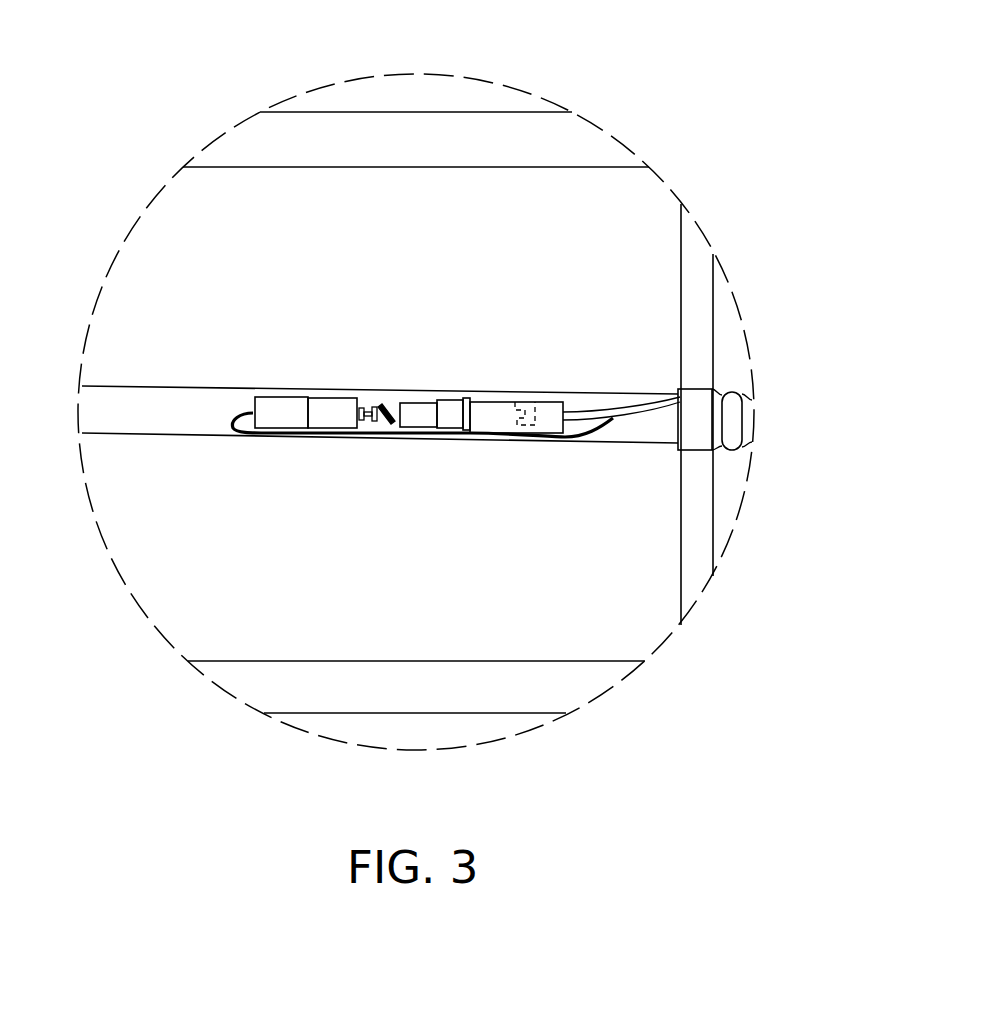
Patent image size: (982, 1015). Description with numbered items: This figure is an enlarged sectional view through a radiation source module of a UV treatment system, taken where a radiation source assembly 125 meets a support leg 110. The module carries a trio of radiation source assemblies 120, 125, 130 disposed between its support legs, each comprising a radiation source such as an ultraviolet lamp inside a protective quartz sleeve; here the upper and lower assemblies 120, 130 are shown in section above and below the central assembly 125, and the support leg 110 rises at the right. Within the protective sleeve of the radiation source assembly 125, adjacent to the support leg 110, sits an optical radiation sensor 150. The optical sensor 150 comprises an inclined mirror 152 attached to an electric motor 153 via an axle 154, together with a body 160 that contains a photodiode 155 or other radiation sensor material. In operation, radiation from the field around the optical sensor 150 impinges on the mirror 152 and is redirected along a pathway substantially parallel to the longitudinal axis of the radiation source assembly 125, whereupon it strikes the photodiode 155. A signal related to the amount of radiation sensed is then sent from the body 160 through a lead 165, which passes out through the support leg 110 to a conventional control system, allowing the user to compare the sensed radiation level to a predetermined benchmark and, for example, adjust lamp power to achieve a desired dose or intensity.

The support leg 110 is at (697, 288).
The radiation source assembly 120 is at (327, 112).
The radiation source assembly 125 is at (117, 440).
The radiation source assembly 130 is at (364, 716).
The optical radiation sensor 150 is at (268, 441).
The inclined mirror 152 is at (385, 400).
The electric motor 153 is at (329, 410).
The axle 154 is at (372, 426).
The photodiode 155 is at (518, 400).
The body 160 is at (480, 410).
The lead 165 is at (655, 408).